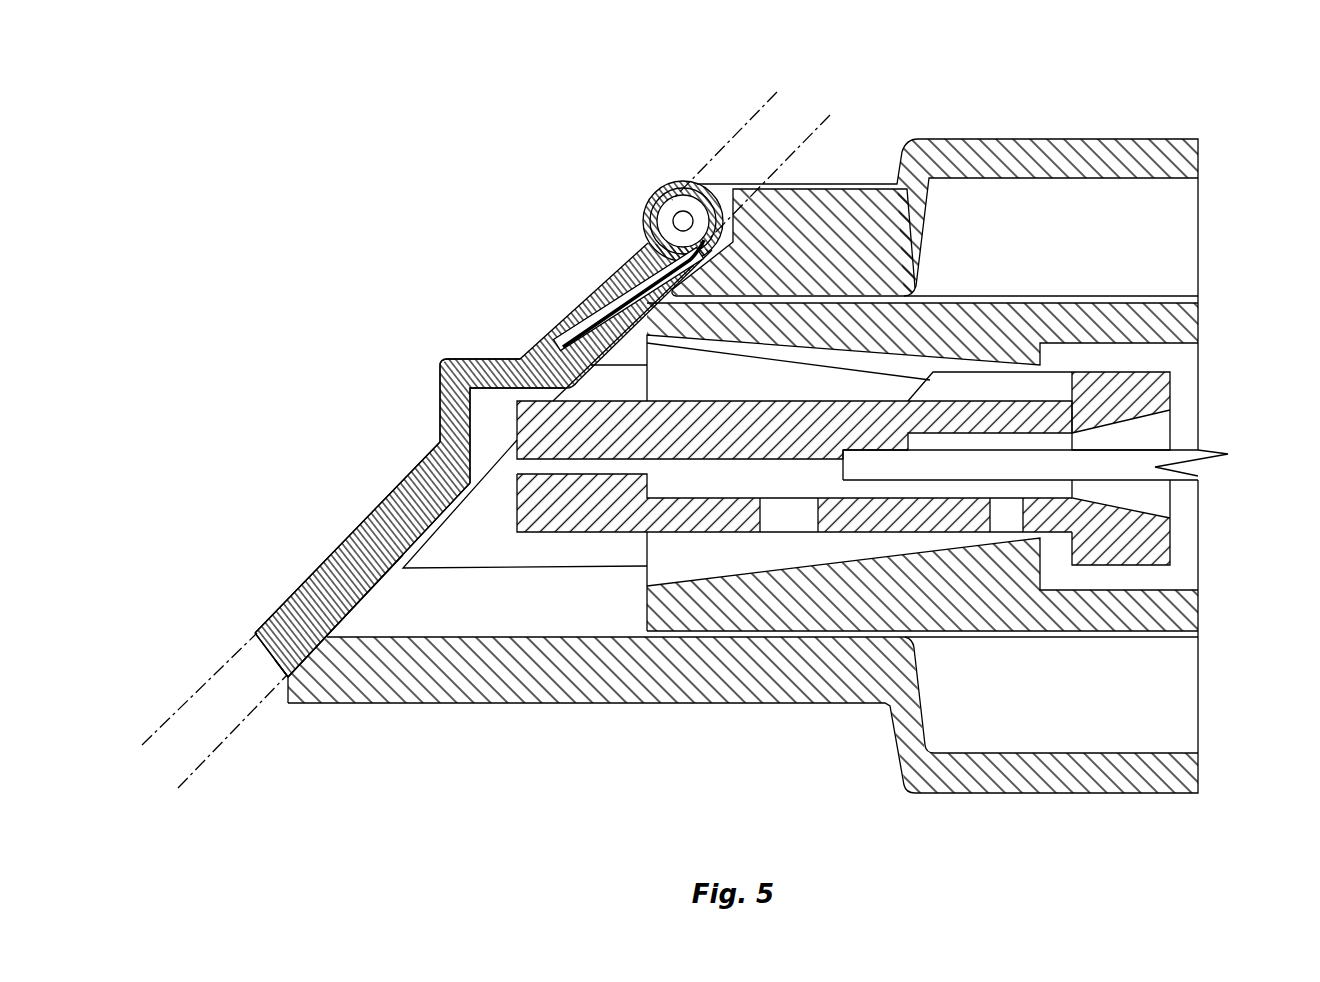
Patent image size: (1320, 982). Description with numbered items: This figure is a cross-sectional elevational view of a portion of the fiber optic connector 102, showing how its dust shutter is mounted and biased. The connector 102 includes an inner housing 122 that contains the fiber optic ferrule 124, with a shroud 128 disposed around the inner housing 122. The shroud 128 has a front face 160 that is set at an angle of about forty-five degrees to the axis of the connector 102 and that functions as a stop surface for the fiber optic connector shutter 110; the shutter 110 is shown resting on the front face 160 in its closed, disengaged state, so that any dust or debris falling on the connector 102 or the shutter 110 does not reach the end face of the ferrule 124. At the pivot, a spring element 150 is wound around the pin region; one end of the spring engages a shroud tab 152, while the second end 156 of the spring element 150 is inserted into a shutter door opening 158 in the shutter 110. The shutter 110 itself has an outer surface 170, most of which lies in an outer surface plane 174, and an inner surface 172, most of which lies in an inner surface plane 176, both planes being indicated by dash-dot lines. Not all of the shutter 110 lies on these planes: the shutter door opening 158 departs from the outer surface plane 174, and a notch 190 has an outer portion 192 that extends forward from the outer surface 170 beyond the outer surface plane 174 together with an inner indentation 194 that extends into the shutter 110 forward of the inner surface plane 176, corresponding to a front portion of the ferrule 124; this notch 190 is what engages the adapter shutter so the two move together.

The fiber optic connector 102 is at (1037, 82).
The fiber optic connector shutter 110 is at (268, 622).
The inner housing 122 is at (1185, 316).
The fiber optic ferrule 124 is at (1140, 388).
The shroud 128 is at (1113, 148).
The spring element 150 is at (665, 182).
The shroud tab 152 is at (820, 180).
The second end of the spring element 156 is at (613, 318).
The shutter door opening 158 is at (565, 330).
The front face 160 is at (287, 674).
The outer surface 170 is at (330, 545).
The inner surface 172 is at (355, 616).
The outer surface plane 174 is at (750, 118).
The inner surface plane 176 is at (809, 138).
The notch 190 is at (408, 366).
The outer portion 192 is at (440, 402).
The inner indentation 194 is at (492, 400).